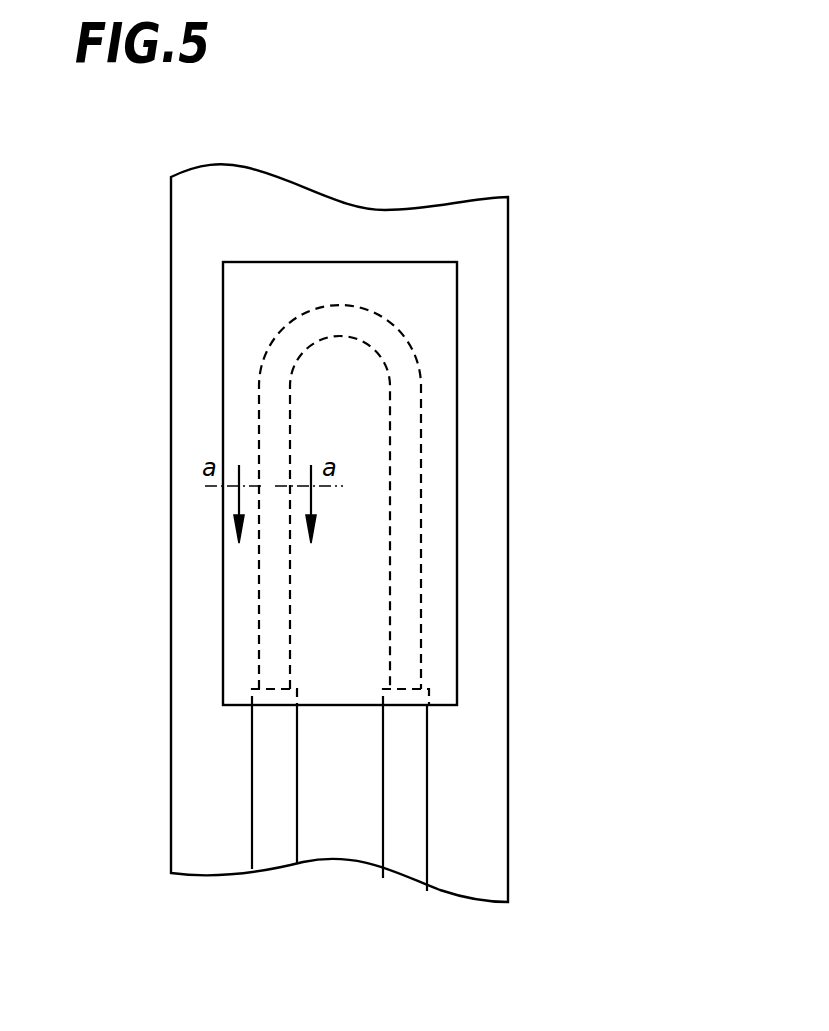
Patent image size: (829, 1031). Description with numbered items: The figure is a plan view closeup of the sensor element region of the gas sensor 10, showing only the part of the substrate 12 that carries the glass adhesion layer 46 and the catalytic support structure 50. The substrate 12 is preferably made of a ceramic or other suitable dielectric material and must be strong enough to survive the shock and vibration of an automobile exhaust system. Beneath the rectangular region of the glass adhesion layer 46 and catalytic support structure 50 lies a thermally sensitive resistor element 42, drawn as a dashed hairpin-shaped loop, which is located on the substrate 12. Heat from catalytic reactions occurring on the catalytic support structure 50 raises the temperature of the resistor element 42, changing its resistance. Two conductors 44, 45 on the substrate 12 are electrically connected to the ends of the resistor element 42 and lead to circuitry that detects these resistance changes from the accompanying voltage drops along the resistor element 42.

The gas sensor 10 is at (488, 169).
The substrate 12 is at (465, 768).
The thermally sensitive resistor element 42 is at (421, 543).
The conductor 44 is at (407, 875).
The conductor 45 is at (272, 857).
The glass adhesion layer 46 is at (457, 425).
The catalytic support structure 50 is at (340, 483).